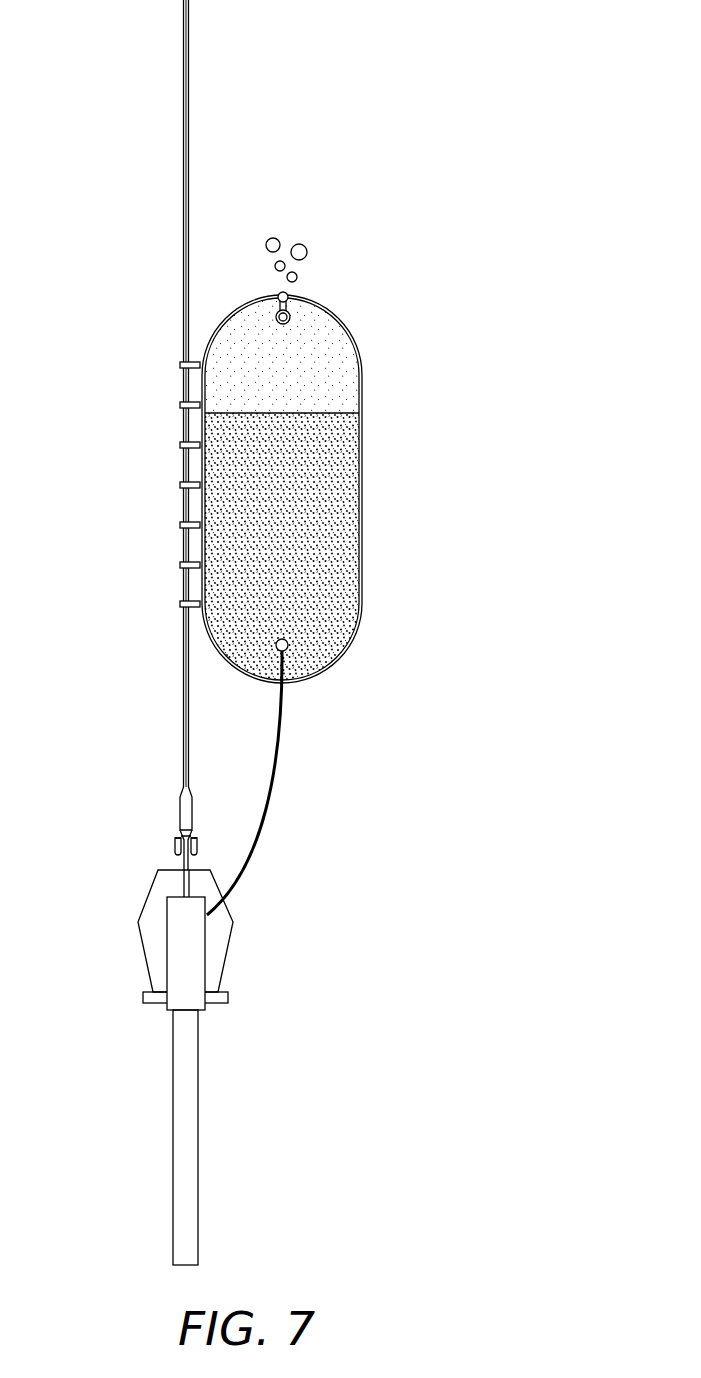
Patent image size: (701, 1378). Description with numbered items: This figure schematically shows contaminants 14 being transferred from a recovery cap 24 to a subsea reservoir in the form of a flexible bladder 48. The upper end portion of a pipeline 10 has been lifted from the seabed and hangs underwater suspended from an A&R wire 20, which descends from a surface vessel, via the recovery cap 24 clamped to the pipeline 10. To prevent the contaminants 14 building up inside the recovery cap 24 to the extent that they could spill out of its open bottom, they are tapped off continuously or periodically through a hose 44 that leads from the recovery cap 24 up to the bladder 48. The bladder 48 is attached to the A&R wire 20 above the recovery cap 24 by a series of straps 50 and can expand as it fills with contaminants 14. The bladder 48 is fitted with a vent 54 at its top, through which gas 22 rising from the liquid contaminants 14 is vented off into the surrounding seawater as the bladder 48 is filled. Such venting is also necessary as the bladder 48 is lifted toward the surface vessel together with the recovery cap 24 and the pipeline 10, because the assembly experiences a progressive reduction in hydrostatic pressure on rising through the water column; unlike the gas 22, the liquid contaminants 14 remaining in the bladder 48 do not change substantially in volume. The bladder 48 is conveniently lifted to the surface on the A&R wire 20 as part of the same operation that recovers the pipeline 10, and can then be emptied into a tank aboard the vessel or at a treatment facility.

The pipeline 10 is at (141, 1150).
The contaminants 14 is at (347, 478).
The A&R wire 20 is at (183, 107).
The gas 22 is at (347, 368).
The recovery cap 24 is at (140, 852).
The hose 44 is at (275, 750).
The flexible bladder 48 is at (357, 638).
The straps 50 is at (180, 485).
The vent 54 is at (280, 300).